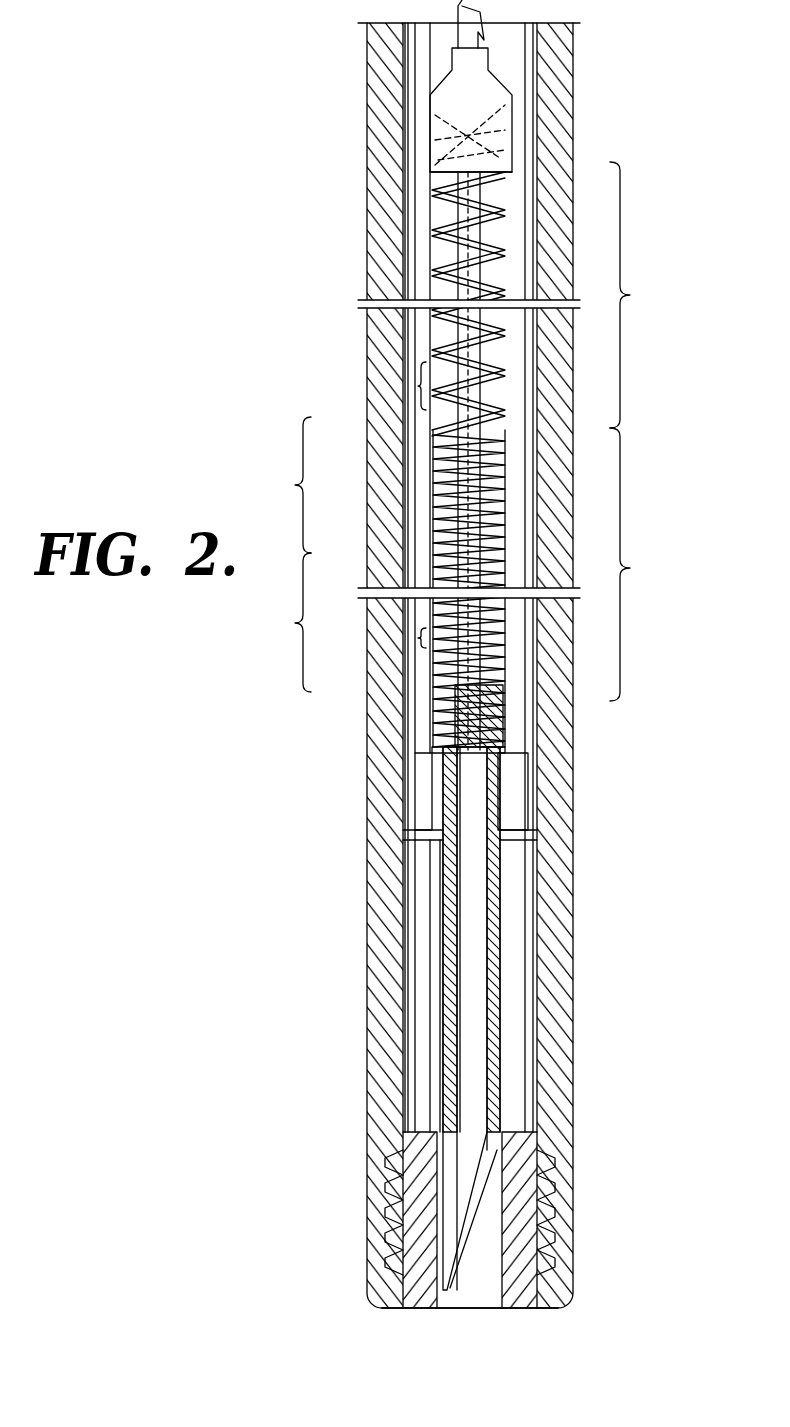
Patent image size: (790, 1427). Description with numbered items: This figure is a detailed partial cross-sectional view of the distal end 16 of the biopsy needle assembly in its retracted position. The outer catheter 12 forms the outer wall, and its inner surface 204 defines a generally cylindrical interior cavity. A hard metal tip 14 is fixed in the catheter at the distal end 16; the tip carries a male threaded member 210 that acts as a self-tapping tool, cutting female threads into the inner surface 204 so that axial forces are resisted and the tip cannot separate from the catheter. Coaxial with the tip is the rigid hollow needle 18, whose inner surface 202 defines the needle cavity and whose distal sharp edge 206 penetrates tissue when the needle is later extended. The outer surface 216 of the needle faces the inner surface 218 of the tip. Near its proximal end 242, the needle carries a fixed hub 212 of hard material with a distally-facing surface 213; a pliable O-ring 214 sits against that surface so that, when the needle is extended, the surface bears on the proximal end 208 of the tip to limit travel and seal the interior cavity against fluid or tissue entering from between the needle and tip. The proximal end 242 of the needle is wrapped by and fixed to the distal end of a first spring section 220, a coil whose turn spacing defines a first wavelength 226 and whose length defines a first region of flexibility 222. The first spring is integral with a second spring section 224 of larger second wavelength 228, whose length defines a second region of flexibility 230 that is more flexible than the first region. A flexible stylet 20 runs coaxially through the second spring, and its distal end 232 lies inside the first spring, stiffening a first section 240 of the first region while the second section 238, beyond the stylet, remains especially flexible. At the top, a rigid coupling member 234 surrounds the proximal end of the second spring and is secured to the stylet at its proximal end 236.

The outer catheter 12 is at (385, 916).
The metal tip 14 is at (380, 1279).
The distal end 16 is at (602, 1141).
The hollow needle 18 is at (450, 1070).
The flexible stylet 20 is at (432, 280).
The inner surface 202 is at (440, 970).
The inner surface 204 is at (413, 712).
The sharp edge 206 is at (470, 1230).
The proximal end 208 is at (425, 1130).
The male threaded member 210 is at (405, 1228).
The fixed hub 212 is at (420, 772).
The distally-facing surface 213 is at (505, 845).
The O-ring 214 is at (430, 838).
The outer surface 216 is at (440, 1012).
The inner surface 218 is at (440, 1188).
The first spring section 220 is at (440, 498).
The first region of flexibility 222 is at (651, 564).
The second spring section 224 is at (432, 228).
The first wavelength 226 is at (418, 636).
The second wavelength 228 is at (418, 392).
The second region of flexibility 230 is at (651, 295).
The distal end 232 is at (403, 543).
The coupling member 234 is at (436, 100).
The proximal end 236 is at (450, 58).
The second section 238 is at (275, 622).
The first section 240 is at (275, 485).
The proximal end 242 is at (505, 668).